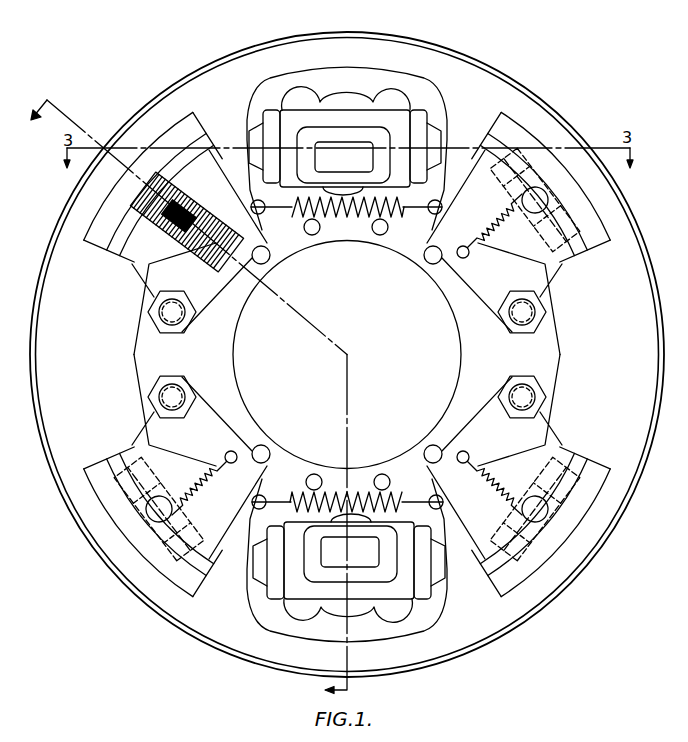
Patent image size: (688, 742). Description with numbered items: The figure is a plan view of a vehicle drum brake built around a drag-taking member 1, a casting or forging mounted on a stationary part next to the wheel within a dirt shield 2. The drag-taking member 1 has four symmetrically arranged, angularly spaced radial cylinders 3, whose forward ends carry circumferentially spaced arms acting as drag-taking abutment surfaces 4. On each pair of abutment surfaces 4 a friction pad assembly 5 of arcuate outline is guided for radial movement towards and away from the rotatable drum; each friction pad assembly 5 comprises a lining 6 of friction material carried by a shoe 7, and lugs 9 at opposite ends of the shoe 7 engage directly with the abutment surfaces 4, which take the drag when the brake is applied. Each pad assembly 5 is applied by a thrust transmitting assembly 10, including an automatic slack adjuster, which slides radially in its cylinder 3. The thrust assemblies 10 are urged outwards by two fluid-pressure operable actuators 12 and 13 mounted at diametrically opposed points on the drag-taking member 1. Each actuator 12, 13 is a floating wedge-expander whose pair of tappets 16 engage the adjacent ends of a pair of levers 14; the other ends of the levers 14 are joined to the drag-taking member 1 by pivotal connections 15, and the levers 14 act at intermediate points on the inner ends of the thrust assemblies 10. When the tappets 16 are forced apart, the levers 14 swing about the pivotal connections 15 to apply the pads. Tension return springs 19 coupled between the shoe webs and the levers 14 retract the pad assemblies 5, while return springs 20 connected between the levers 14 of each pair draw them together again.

The drag-taking member 1 is at (236, 352).
The dirt shield 2 is at (570, 118).
The radial cylinder 3 is at (493, 195).
The drag-taking abutment surface 4 is at (508, 137).
The friction pad assembly 5 is at (576, 195).
The lining 6 is at (567, 138).
The shoe 7 is at (580, 232).
The lug 9 is at (481, 145).
The thrust transmitting assembly 10 is at (248, 252).
The fluid-pressure operable actuator 12 is at (365, 128).
The fluid-pressure operable actuator 13 is at (388, 612).
The lever 14 is at (483, 300).
The pivotal connection 15 is at (532, 311).
The tappet 16 is at (262, 138).
The tension return spring 19 is at (466, 258).
The return spring 20 is at (360, 236).